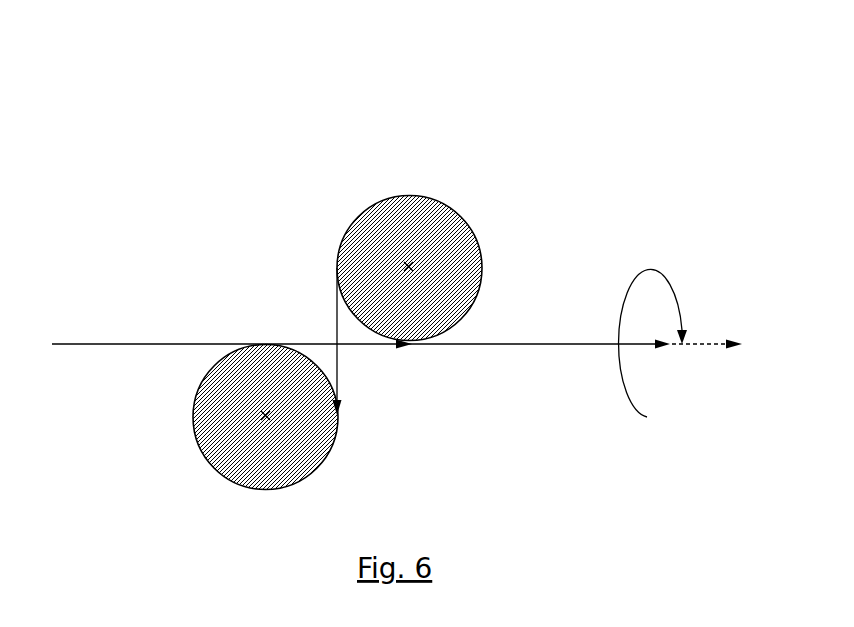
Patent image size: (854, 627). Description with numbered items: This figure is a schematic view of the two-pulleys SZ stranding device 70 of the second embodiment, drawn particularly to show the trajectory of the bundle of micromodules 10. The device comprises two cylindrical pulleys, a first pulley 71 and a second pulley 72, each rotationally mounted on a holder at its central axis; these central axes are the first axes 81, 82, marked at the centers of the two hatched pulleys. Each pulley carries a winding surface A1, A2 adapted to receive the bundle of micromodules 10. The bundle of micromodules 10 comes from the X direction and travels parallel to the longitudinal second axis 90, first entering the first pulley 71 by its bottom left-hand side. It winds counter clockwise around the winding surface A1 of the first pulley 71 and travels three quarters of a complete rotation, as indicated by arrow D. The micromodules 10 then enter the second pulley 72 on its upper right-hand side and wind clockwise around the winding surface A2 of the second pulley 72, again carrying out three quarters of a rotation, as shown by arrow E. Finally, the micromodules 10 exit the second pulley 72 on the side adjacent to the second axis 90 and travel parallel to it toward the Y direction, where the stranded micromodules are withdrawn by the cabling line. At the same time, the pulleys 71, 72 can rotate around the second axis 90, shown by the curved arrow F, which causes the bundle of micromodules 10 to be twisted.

The SZ stranding device 70 is at (170, 128).
The bundle of micromodules 10 is at (95, 343).
The first pulley 71 is at (450, 262).
The second pulley 72 is at (323, 462).
The first axis 81 is at (410, 284).
The first axis 82 is at (267, 434).
The second axis 90 is at (688, 343).
The winding surface A1 is at (359, 208).
The winding surface A2 is at (192, 440).